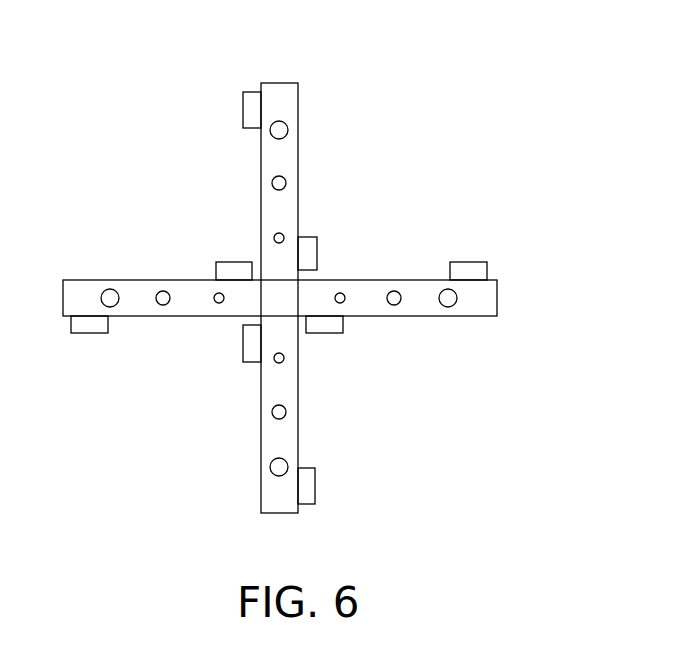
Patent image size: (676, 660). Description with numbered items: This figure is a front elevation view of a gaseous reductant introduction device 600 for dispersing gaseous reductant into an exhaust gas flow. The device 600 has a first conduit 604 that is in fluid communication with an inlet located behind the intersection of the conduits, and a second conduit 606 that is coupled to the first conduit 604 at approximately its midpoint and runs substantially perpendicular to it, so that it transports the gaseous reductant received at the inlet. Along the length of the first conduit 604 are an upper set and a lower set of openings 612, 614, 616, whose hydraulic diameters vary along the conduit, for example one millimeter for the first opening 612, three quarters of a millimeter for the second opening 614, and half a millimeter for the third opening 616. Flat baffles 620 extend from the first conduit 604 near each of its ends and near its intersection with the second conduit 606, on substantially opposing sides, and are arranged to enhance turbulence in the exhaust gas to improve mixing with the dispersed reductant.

The gaseous reductant introduction device 600 is at (500, 80).
The first conduit 604 is at (300, 102).
The second conduit 606 is at (73, 280).
The first opening 612 is at (288, 130).
The second opening 614 is at (286, 183).
The third opening 616 is at (284, 238).
The baffle 620 is at (238, 102).